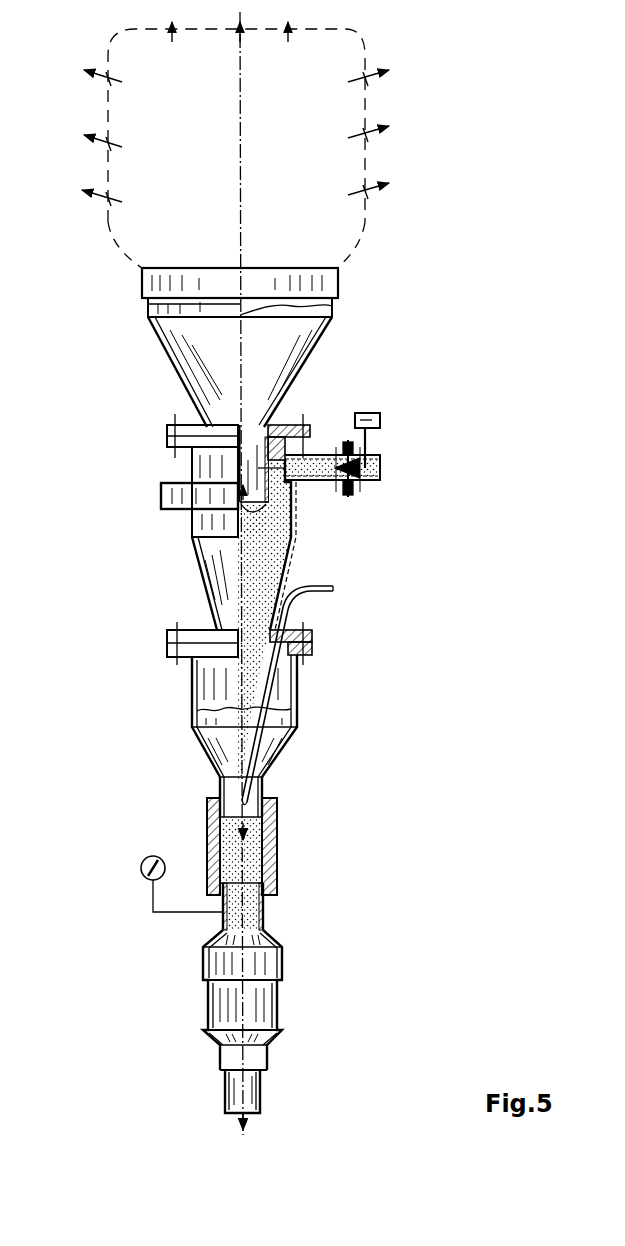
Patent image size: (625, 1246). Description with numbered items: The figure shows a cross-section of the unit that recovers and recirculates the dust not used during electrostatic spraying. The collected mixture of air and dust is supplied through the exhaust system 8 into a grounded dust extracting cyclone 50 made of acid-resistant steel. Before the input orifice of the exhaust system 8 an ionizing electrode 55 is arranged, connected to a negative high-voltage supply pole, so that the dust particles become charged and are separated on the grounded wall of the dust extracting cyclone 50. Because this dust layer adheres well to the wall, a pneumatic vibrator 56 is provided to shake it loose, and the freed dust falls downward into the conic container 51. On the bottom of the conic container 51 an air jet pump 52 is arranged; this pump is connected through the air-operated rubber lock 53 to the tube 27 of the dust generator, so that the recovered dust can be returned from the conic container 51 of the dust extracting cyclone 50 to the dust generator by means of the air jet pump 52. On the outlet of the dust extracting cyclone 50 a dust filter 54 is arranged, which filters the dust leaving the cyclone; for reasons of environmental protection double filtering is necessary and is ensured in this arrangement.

The dust filter 54 is at (322, 210).
The dust extracting cyclone 50 is at (293, 517).
The pneumatic vibrator 56 is at (173, 497).
The exhaust system 8 is at (404, 468).
The ionizing electrode 55 is at (381, 416).
The conic container 51 is at (294, 706).
The air jet pump 52 is at (393, 588).
The air-operated rubber lock 53 is at (283, 1006).
The tube 27 is at (258, 1086).